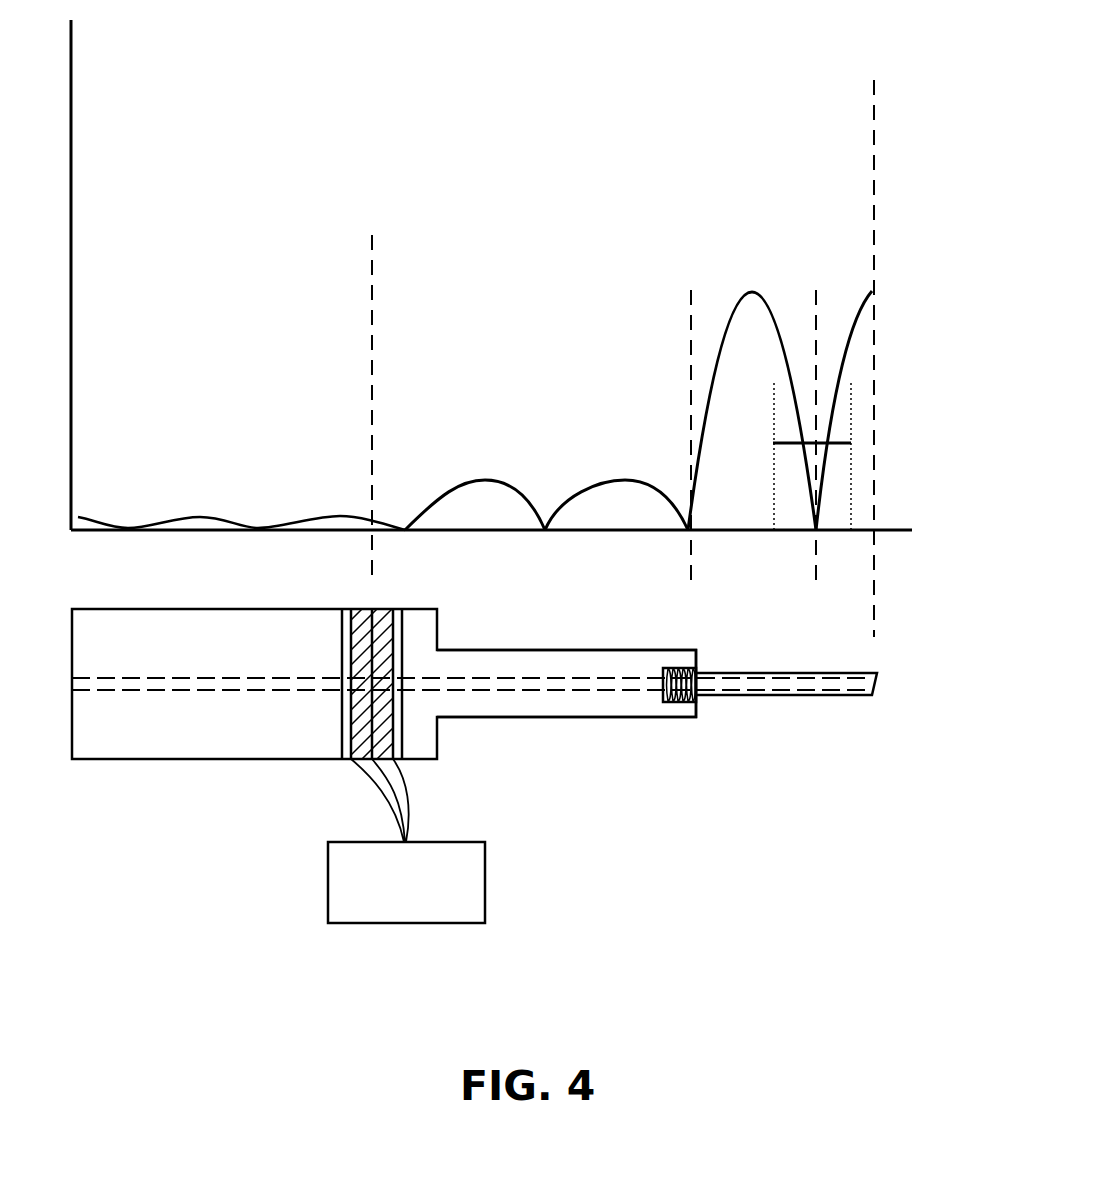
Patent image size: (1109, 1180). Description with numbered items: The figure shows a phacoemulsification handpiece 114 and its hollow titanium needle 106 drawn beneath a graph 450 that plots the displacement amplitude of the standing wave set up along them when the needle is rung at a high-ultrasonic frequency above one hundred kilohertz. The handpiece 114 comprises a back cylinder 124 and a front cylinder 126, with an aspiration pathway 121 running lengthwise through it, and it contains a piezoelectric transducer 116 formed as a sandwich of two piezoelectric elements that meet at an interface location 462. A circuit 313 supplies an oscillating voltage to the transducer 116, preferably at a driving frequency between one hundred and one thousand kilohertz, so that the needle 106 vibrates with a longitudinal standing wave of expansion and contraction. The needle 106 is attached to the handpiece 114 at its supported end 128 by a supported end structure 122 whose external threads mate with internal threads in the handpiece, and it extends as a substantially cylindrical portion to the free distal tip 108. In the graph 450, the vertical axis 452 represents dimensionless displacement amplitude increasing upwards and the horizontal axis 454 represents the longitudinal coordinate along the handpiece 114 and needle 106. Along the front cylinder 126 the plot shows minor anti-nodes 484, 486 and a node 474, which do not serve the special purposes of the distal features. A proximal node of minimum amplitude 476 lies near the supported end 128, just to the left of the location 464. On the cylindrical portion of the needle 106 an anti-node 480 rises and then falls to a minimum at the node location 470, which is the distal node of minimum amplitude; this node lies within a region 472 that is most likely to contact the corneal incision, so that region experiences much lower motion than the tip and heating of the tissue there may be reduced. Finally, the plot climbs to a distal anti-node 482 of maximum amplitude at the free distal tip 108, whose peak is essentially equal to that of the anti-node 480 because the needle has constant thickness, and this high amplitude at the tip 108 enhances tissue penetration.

The vertical axis 452 is at (72, 35).
The horizontal axis 454 is at (186, 533).
The graph 450 is at (203, 517).
The interface location 462 is at (372, 345).
The anti-node 484 is at (478, 478).
The anti-node 486 is at (620, 478).
The location 464 is at (688, 408).
The anti-node 480 is at (757, 290).
The distal anti-node 482 is at (858, 297).
The region 472 is at (852, 428).
The node 474 is at (545, 542).
The proximal node of minimum amplitude 476 is at (686, 542).
The node location 470 is at (815, 542).
The handpiece 114 is at (530, 737).
The piezoelectric transducer 116 is at (349, 606).
The back cylinder 124 is at (212, 759).
The aspiration pathway 121 is at (302, 690).
The front cylinder 126 is at (593, 717).
The supported end structure 122 is at (683, 717).
The supported end 128 is at (707, 704).
The hollow titanium needle 106 is at (807, 695).
The free distal tip 108 is at (914, 680).
The circuit 313 is at (406, 841).